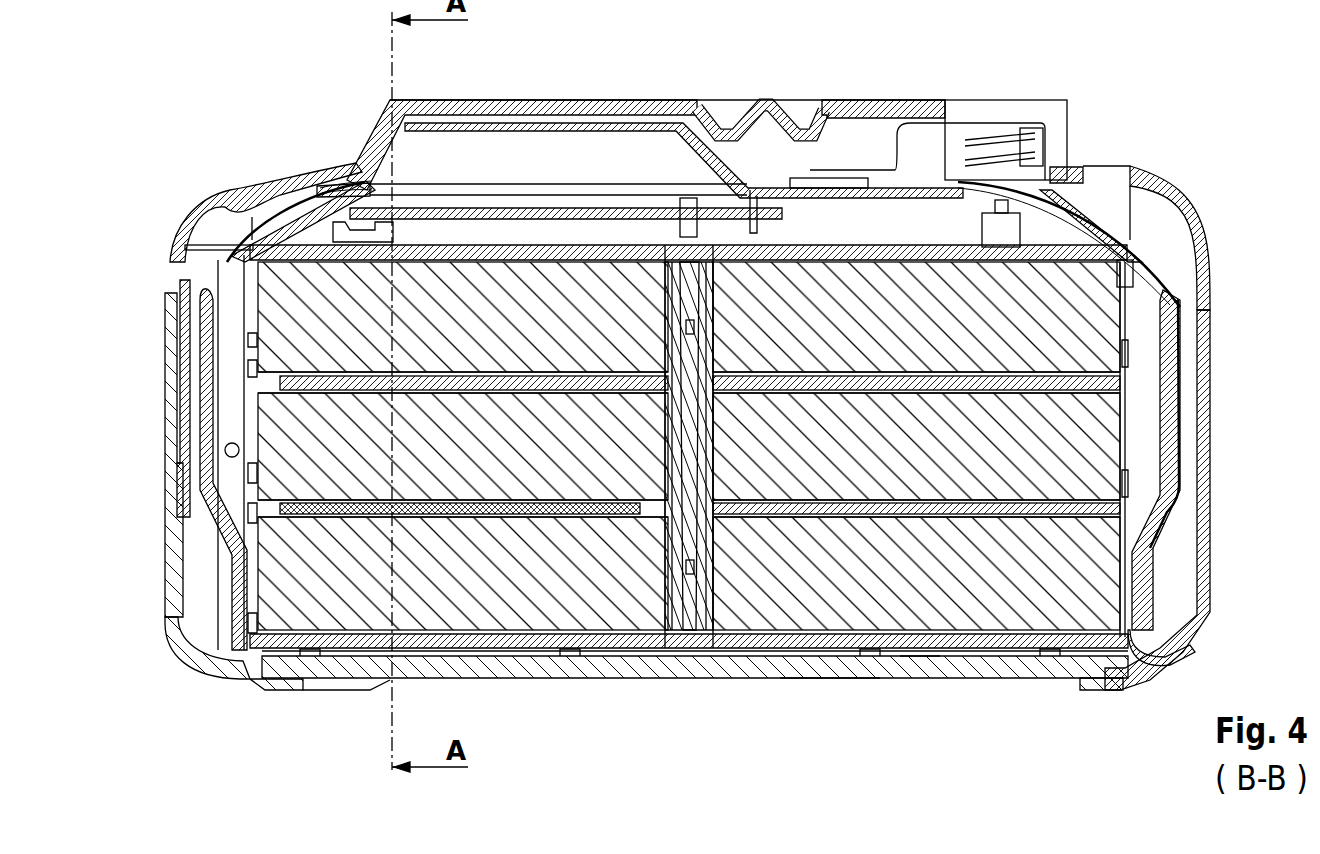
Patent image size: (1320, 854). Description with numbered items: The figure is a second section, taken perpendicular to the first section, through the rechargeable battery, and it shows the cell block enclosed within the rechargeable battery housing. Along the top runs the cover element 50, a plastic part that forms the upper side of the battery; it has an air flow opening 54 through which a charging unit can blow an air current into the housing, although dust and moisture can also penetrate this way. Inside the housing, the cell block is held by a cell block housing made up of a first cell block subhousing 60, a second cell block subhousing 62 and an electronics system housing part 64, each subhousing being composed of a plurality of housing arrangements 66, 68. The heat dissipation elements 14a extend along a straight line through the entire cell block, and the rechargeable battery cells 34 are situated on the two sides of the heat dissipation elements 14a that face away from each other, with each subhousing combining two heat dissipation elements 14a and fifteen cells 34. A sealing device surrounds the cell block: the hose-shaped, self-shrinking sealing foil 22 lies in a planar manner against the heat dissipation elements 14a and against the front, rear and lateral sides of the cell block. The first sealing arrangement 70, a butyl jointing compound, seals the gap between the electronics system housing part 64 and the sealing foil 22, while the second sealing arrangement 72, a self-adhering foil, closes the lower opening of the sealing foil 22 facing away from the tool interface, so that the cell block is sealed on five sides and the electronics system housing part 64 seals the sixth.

The heat dissipation elements 14a is at (1120, 500).
The sealing foil 22 is at (1168, 522).
The rechargeable battery cells 34 is at (1063, 320).
The cover element 50 is at (866, 118).
The air flow opening 54 is at (1128, 172).
The first cell block subhousing 60 is at (463, 657).
The second cell block subhousing 62 is at (921, 655).
The electronics system housing part 64 is at (578, 125).
The housing arrangement 66 is at (250, 237).
The housing arrangement 68 is at (1043, 258).
The first sealing arrangement 70 is at (987, 192).
The second sealing arrangement 72 is at (828, 650).